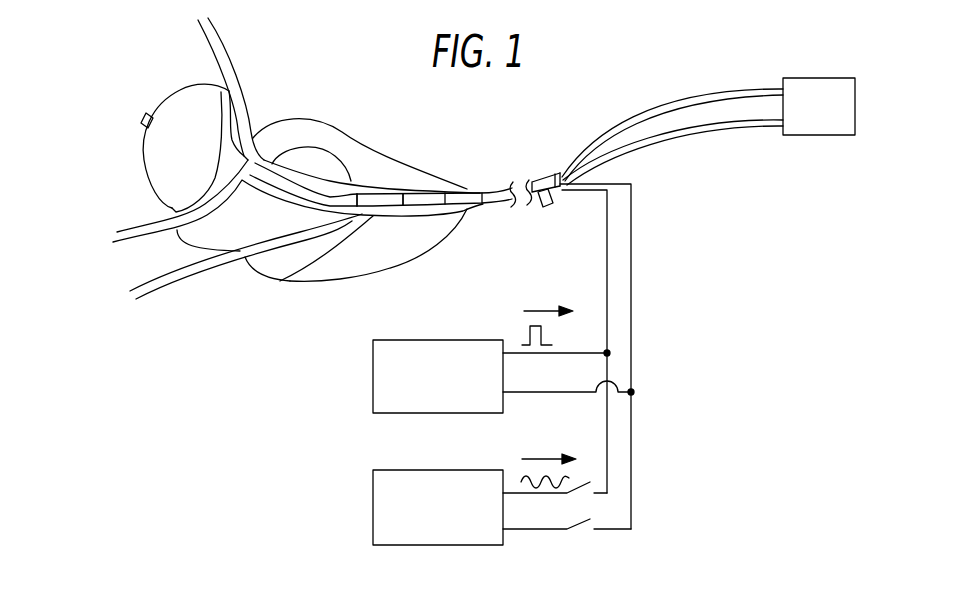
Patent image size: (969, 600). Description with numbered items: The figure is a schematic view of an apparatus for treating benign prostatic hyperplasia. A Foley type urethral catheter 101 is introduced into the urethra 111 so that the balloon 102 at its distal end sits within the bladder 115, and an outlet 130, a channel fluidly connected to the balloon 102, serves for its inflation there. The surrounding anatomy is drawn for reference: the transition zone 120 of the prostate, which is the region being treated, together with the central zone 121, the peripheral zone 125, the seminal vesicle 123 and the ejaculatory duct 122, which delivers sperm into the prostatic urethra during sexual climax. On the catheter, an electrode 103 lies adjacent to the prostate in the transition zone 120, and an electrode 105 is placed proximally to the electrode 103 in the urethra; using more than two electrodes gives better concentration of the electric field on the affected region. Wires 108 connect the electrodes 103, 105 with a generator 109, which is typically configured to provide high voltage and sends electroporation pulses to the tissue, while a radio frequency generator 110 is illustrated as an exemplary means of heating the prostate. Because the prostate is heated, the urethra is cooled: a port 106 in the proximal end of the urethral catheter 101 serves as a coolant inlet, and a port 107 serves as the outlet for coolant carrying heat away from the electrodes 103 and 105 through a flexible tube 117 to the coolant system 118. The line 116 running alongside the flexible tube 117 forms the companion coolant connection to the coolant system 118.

The urethral catheter 101 is at (302, 186).
The balloon 102 is at (178, 108).
The electrode 103 is at (331, 190).
The electrode 105 is at (437, 198).
The port 106 is at (582, 145).
The port 107 is at (585, 157).
The wires 108 is at (608, 257).
The generator 109 is at (373, 378).
The radio frequency (RF) generator 110 is at (373, 497).
The urethra 111 is at (385, 193).
The bladder 115 is at (218, 65).
The fluid return line 116 is at (745, 75).
The flexible tube 117 is at (753, 112).
The coolant system 118 is at (838, 123).
The transition zone 120 is at (299, 157).
The central zone 121 is at (267, 267).
The ejaculatory duct 122 is at (304, 240).
The seminal vesicle 123 is at (173, 278).
The peripheral zone 125 is at (373, 255).
The outlet 130 is at (547, 212).